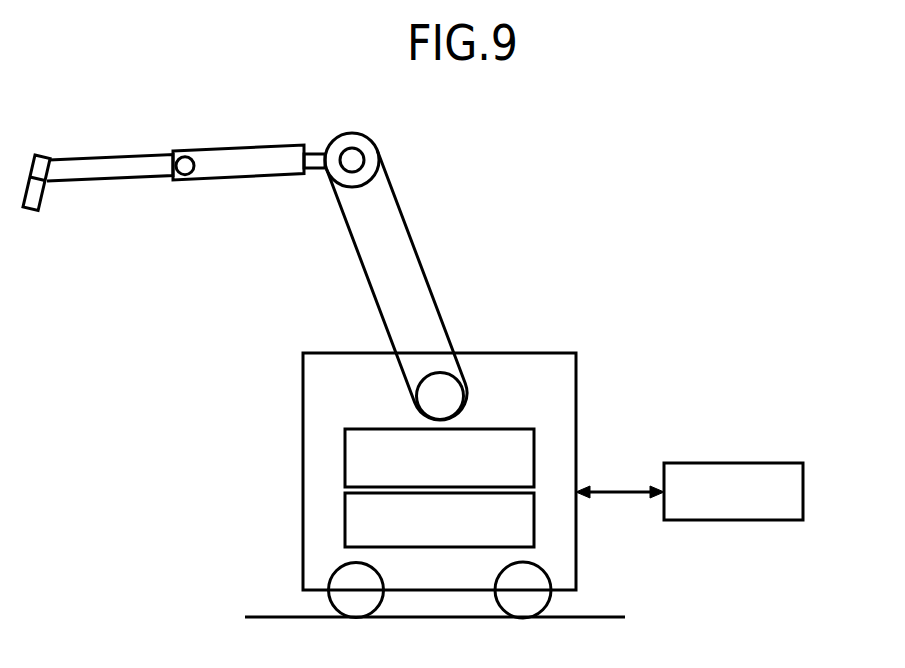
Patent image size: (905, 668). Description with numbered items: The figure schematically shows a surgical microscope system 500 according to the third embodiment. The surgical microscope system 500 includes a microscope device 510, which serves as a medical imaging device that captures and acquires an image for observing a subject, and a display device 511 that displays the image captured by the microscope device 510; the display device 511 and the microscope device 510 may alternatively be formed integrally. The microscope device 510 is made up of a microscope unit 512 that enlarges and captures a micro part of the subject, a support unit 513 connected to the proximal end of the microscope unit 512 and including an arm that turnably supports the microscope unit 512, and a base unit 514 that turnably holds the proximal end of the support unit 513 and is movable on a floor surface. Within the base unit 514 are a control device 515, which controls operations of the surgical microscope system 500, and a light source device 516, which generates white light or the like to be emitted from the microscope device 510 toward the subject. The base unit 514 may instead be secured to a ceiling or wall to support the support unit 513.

The surgical microscope system 500 is at (600, 255).
The microscope device 510 is at (393, 198).
The display device 511 is at (803, 492).
The microscope unit 512 is at (33, 190).
The support unit 513 is at (225, 172).
The base unit 514 is at (303, 502).
The control device 515 is at (534, 450).
The light source device 516 is at (534, 514).